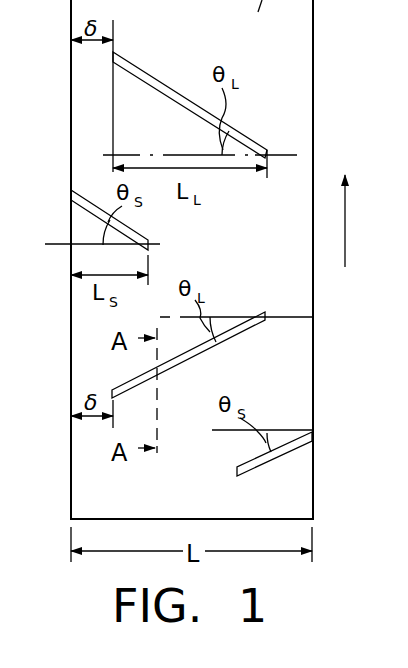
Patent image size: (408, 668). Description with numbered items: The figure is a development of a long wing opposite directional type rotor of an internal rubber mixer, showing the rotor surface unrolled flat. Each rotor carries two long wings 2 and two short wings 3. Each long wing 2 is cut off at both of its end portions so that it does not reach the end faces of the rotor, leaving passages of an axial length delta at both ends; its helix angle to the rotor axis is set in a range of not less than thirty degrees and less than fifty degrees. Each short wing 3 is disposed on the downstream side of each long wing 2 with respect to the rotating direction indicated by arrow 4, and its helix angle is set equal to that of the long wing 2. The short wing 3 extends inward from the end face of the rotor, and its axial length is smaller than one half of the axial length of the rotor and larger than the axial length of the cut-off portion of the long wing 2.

The long wing 2 is at (177, 93).
The short wing 3 is at (79, 196).
The arrow 4 is at (345, 218).